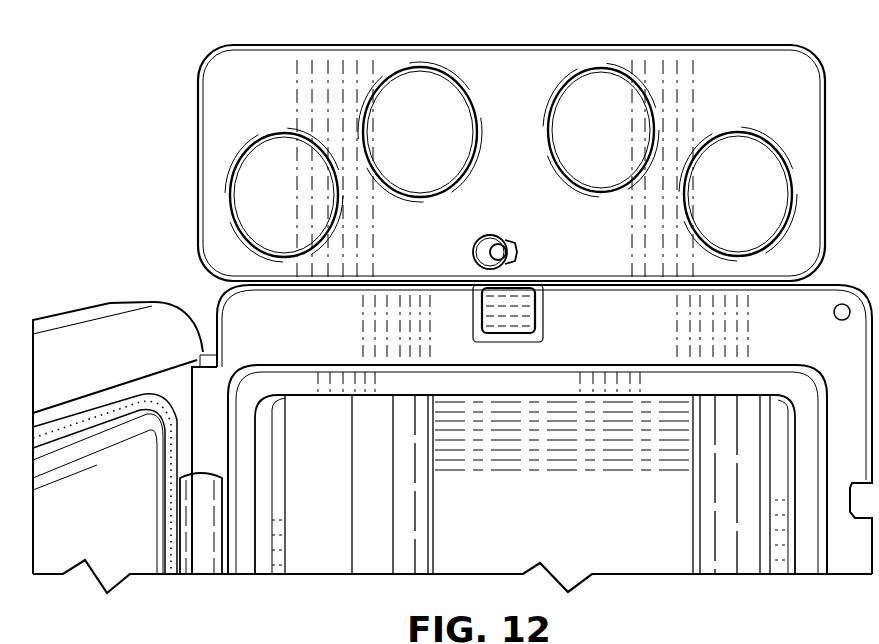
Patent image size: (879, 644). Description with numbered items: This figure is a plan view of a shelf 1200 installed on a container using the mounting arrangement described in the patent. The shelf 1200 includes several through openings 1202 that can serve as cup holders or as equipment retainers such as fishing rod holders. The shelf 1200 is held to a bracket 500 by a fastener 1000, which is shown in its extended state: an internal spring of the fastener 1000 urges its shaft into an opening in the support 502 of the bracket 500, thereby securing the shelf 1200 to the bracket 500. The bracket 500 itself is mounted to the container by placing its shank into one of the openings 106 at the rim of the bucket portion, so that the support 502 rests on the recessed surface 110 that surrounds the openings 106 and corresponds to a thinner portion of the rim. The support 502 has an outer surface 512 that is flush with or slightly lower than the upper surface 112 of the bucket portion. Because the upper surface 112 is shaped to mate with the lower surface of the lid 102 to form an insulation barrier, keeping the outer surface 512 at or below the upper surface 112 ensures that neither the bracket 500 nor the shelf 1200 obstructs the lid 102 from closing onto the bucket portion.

The shelf 1200 is at (262, 105).
The through openings 1202 is at (384, 165).
The fastener 1000 is at (497, 240).
The bracket 500 is at (490, 288).
The support 502 is at (510, 290).
The outer surface 512 is at (507, 310).
The recessed surface 110 is at (477, 335).
The upper surface 112 is at (315, 328).
The openings 106 is at (502, 333).
The hinged lid 102 is at (452, 473).